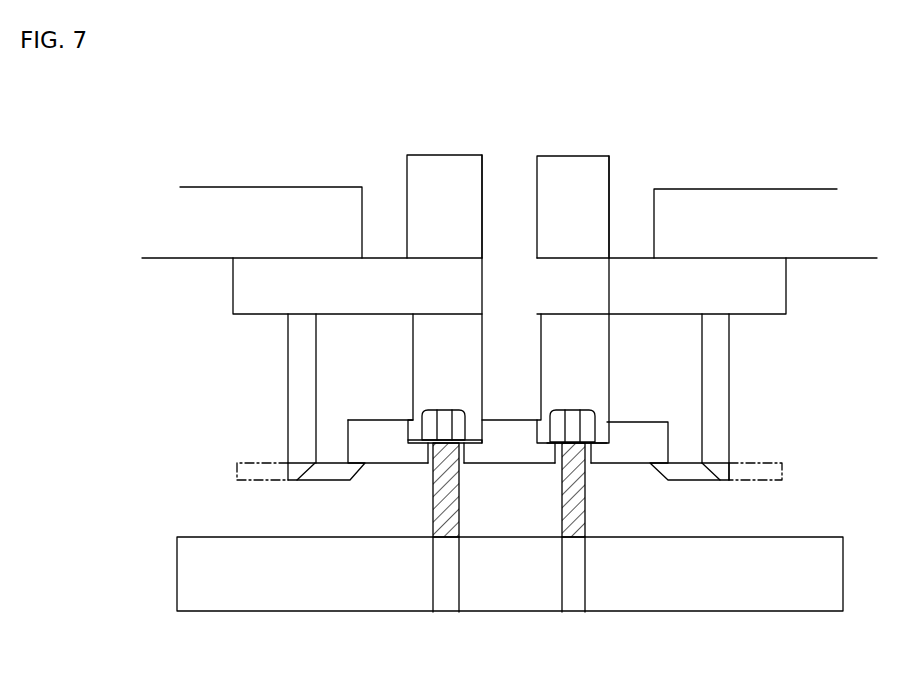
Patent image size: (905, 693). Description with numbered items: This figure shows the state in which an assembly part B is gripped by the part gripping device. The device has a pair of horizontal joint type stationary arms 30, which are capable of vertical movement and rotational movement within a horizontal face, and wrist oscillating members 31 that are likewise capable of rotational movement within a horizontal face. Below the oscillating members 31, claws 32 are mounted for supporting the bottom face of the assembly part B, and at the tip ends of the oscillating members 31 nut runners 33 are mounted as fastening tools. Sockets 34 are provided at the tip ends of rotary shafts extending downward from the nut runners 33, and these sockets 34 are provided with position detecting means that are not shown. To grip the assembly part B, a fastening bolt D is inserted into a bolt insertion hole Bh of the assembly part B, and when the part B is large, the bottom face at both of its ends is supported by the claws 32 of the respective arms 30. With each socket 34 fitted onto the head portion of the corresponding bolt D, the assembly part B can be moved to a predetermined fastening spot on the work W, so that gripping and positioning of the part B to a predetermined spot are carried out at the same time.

The stationary arm 30 is at (265, 215).
The wrist oscillating member 31 is at (257, 305).
The claw 32 is at (325, 475).
The nut runner 33 is at (443, 175).
The socket 34 is at (430, 362).
The assembly part B is at (643, 437).
The bolt insertion hole Bh is at (440, 470).
The fastening bolt D is at (455, 497).
The workpiece W is at (770, 590).